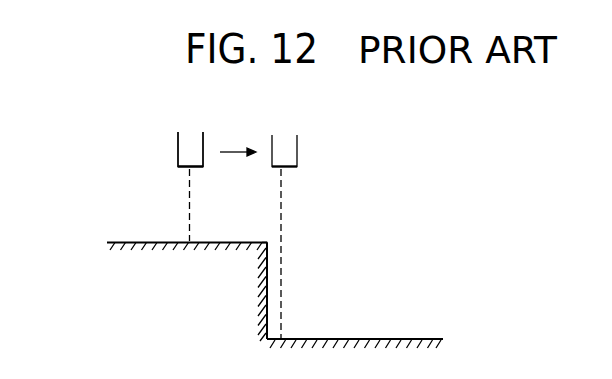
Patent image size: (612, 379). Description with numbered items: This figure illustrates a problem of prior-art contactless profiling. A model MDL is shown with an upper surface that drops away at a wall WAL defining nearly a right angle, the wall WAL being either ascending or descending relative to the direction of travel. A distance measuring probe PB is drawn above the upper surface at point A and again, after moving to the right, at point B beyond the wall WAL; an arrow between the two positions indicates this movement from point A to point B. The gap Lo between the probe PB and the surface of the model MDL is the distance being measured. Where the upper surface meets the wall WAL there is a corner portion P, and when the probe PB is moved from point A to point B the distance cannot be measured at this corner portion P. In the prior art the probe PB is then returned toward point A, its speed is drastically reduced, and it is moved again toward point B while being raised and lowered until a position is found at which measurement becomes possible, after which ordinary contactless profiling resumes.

The distance measuring probe PB is at (178, 148).
The point A is at (190, 131).
The point B is at (284, 218).
The distance between probe and model surface Lo is at (189, 168).
The model MDL is at (137, 262).
The corner portion P is at (252, 261).
The wall WAL is at (267, 280).